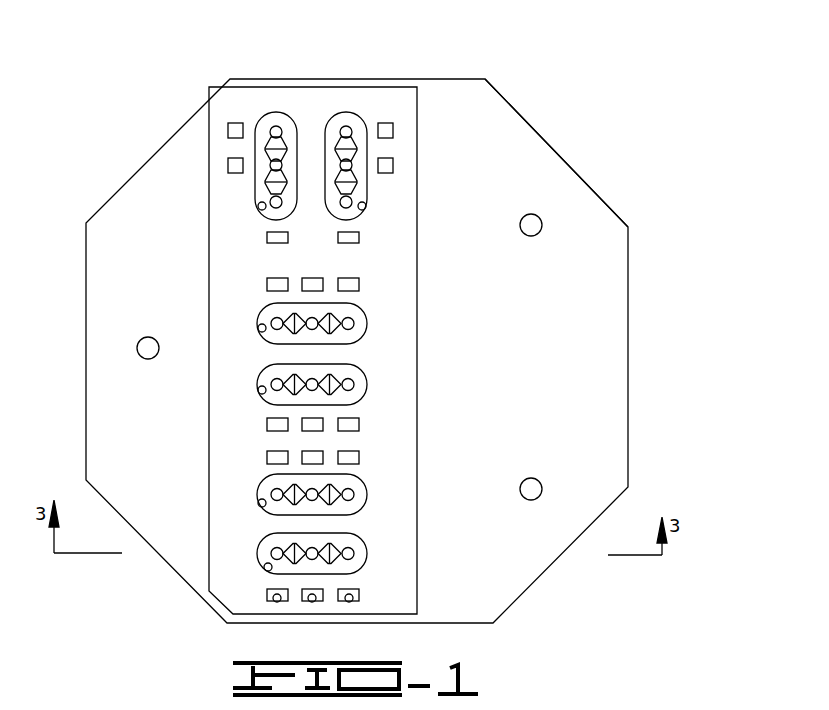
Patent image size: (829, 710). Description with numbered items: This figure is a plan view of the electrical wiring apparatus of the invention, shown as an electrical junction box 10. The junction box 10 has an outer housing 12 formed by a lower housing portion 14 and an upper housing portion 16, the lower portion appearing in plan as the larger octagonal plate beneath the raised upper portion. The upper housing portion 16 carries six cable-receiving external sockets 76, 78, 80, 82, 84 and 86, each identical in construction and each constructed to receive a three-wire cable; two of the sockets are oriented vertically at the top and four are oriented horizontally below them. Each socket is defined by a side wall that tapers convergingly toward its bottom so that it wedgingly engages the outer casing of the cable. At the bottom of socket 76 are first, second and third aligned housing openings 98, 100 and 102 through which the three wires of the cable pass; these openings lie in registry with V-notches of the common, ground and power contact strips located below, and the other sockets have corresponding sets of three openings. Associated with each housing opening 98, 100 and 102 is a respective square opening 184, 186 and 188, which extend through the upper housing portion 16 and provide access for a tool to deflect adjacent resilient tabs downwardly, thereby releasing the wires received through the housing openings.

The electrical junction box 10 is at (372, 354).
The outer housing 12 is at (372, 336).
The lower housing portion 14 is at (553, 172).
The upper housing portion 16 is at (305, 356).
The cable-receiving external socket 76 is at (305, 585).
The cable-receiving external socket 78 is at (261, 501).
The cable-receiving external socket 80 is at (261, 392).
The cable-receiving external socket 82 is at (261, 331).
The cable-receiving external socket 84 is at (363, 209).
The cable-receiving external socket 86 is at (260, 209).
The first housing opening 98 is at (350, 558).
The second housing opening 100 is at (314, 550).
The third housing opening 102 is at (275, 557).
The square opening 184 is at (362, 598).
The square opening 186 is at (318, 602).
The square opening 188 is at (279, 602).